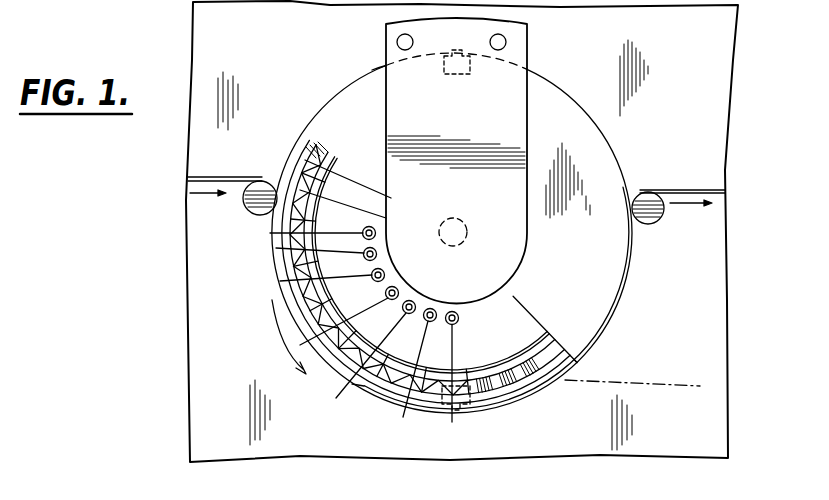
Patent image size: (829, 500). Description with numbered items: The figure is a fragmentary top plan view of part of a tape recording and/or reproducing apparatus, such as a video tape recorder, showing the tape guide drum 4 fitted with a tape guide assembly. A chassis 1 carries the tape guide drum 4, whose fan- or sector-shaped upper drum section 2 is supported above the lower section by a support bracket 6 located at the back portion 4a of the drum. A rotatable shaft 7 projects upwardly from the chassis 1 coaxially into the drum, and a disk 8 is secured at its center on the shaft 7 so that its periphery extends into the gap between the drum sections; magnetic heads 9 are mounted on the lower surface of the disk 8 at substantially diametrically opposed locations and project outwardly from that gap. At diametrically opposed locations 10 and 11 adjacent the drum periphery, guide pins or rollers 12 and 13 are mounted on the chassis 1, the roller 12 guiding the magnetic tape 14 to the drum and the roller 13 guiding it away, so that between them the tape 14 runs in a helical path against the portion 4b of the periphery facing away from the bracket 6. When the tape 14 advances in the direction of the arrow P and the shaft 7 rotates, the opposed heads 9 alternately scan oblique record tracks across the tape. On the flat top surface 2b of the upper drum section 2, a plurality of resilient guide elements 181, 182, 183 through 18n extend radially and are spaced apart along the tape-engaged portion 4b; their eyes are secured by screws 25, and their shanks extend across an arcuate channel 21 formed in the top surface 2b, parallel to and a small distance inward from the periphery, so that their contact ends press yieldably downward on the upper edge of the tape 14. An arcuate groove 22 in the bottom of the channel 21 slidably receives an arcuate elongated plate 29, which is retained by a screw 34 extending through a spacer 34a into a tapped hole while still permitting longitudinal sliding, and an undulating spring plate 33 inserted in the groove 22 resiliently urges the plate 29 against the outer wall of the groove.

The chassis 1 is at (712, 28).
The upper drum section 2 is at (525, 314).
The flat top surface of upper drum section 2b is at (520, 290).
The tape guide drum 4 is at (655, 105).
The back portion of tape guide drum 4a is at (372, 70).
The portion of drum periphery facing away from bracket 4b is at (352, 384).
The support bracket 6 is at (520, 114).
The rotatable shaft 7 is at (468, 235).
The disk 8 is at (617, 292).
The magnetic heads 9 is at (530, 56).
The location 10 is at (271, 152).
The location 11 is at (648, 178).
The guide pin or roller 12 is at (255, 206).
The guide pin or roller 13 is at (655, 222).
The magnetic tape 14 is at (639, 388).
The resilient guide element 181 is at (362, 229).
The resilient guide element 182 is at (364, 253).
The resilient guide element 183 is at (372, 276).
The resilient guide element 18n is at (455, 326).
The arcuate channel 21 is at (563, 333).
The arcuate groove 22 is at (567, 350).
The screws 25 is at (455, 306).
The arcuate elongated plate 29 is at (290, 245).
The undulating spring plate 33 is at (300, 268).
The screw 34 is at (304, 146).
The spacer 34a is at (322, 148).
The arrow indicating tape running direction P is at (272, 325).